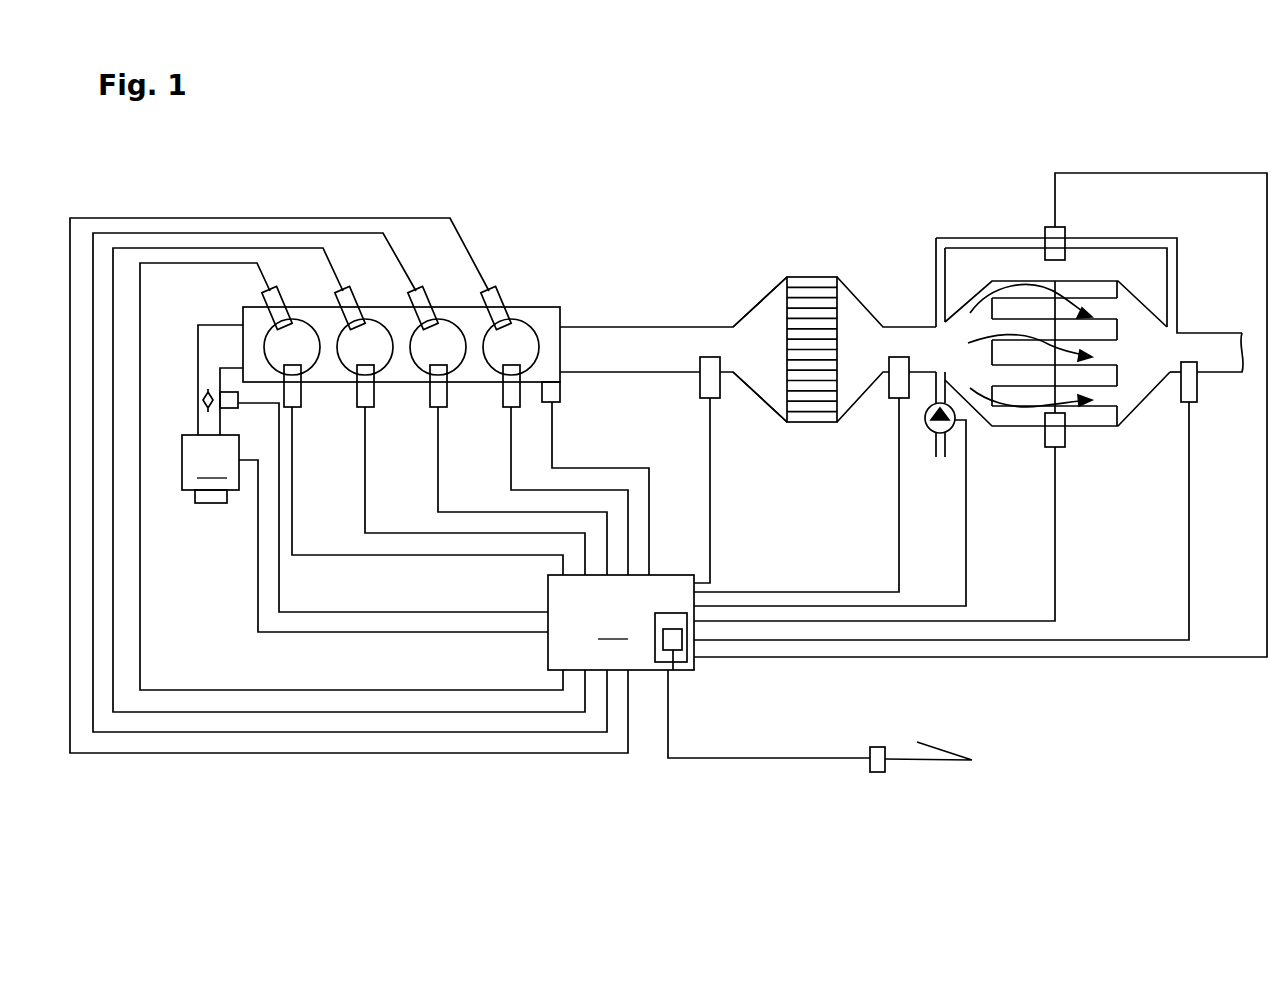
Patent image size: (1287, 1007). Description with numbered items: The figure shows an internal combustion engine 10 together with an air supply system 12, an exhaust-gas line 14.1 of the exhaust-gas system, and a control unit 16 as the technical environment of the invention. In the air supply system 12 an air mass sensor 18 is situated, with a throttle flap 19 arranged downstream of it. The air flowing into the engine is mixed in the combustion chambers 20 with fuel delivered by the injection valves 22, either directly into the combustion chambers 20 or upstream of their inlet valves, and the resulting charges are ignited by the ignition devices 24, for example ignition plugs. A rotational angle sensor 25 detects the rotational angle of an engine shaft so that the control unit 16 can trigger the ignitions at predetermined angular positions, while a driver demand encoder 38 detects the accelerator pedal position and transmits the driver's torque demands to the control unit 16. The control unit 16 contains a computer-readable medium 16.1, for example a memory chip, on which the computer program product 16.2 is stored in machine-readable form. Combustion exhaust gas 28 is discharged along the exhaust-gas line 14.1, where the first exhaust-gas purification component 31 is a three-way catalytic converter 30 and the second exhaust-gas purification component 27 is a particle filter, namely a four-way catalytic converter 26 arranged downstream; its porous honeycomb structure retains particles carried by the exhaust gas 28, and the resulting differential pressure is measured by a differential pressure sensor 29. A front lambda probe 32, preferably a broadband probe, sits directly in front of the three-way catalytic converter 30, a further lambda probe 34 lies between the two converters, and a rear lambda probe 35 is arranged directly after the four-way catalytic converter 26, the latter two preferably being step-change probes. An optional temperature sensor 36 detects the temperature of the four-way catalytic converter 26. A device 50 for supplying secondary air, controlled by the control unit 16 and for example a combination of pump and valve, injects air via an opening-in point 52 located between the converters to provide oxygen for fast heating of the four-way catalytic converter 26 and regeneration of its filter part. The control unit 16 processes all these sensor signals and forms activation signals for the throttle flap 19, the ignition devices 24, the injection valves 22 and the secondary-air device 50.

The internal combustion engine 10 is at (636, 273).
The air supply system 12 is at (208, 530).
The exhaust gas line 14.1 is at (755, 440).
The control unit 16 is at (709, 666).
The computer-readable medium 16.1 is at (690, 655).
The computer program product 16.2 is at (673, 672).
The air mass sensor 18 is at (365, 478).
The throttle flap 19 is at (203, 397).
The combustion chambers 20 is at (537, 313).
The injection valves 22 is at (508, 400).
The ignition devices 24 is at (503, 300).
The rotational angle sensor 25 is at (553, 402).
The four-way catalytic converter 26 is at (1160, 390).
The second exhaust-gas purification component 27 is at (1013, 445).
The exhaust gas 28 is at (972, 290).
The differential pressure sensor 29 is at (1042, 240).
The three-way catalytic converter 30 is at (813, 424).
The first exhaust-gas purification component 31 is at (803, 268).
The front lambda probe 32 is at (700, 385).
The further lambda probe 34 is at (892, 392).
The rear lambda probe 35 is at (1197, 395).
The temperature sensor 36 is at (1066, 440).
The driver demand encoder 38 is at (878, 772).
The device for the supply of secondary air 50 is at (926, 440).
The opening-in point 52 is at (935, 310).